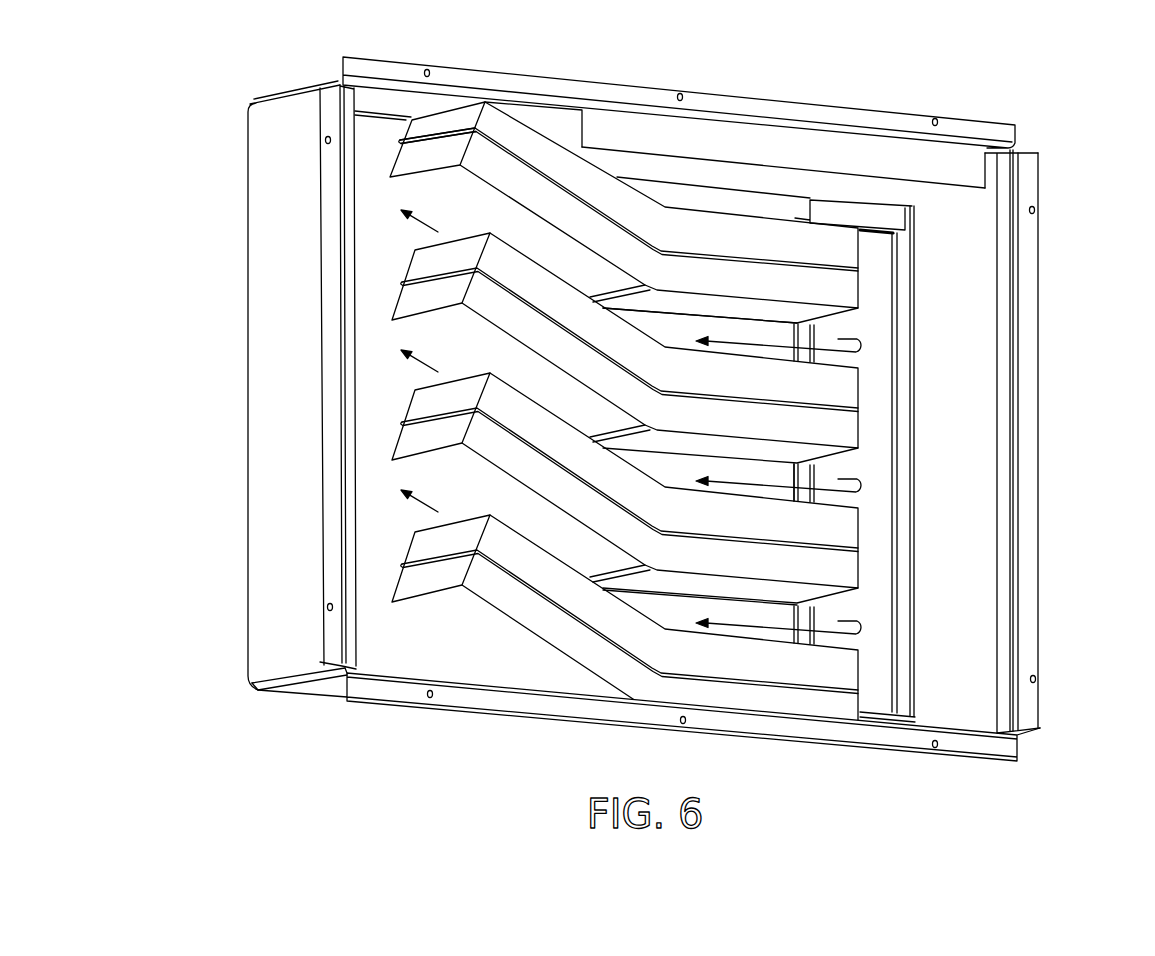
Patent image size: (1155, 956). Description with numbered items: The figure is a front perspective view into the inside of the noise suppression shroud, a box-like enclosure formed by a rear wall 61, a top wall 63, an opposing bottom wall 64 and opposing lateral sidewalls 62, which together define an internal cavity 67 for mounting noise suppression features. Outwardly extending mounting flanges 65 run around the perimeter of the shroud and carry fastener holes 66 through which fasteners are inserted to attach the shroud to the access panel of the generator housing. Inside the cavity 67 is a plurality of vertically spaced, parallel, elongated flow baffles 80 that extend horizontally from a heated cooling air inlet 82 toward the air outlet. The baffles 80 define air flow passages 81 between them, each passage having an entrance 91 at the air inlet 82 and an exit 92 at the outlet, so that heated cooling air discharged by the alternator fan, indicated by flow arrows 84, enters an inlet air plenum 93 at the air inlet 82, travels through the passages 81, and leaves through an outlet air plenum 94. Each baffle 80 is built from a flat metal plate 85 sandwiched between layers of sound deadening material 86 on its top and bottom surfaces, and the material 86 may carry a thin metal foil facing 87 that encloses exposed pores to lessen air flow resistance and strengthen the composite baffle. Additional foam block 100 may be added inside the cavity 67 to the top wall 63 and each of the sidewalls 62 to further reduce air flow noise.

The rear wall 61 is at (390, 657).
The lateral sidewalls 62 is at (286, 357).
The top wall 63 is at (397, 102).
The bottom wall 64 is at (335, 682).
The mounting flanges 65 is at (813, 102).
The fastener holes 66 is at (937, 122).
The internal cavity 67 is at (968, 592).
The flow baffles 80 is at (506, 143).
The air flow passages 81 is at (729, 635).
The heated cooling air inlet 82 is at (895, 448).
The flow arrows 84 is at (787, 647).
The flat metal plate 85 is at (594, 152).
The sound deadening material 86 is at (440, 157).
The thin metal foil facing 87 is at (565, 250).
The entrance 91 is at (868, 356).
The exit 92 is at (412, 246).
The inlet air plenum 93 is at (948, 522).
The outlet air plenum 94 is at (382, 545).
The foam block 100 is at (350, 454).